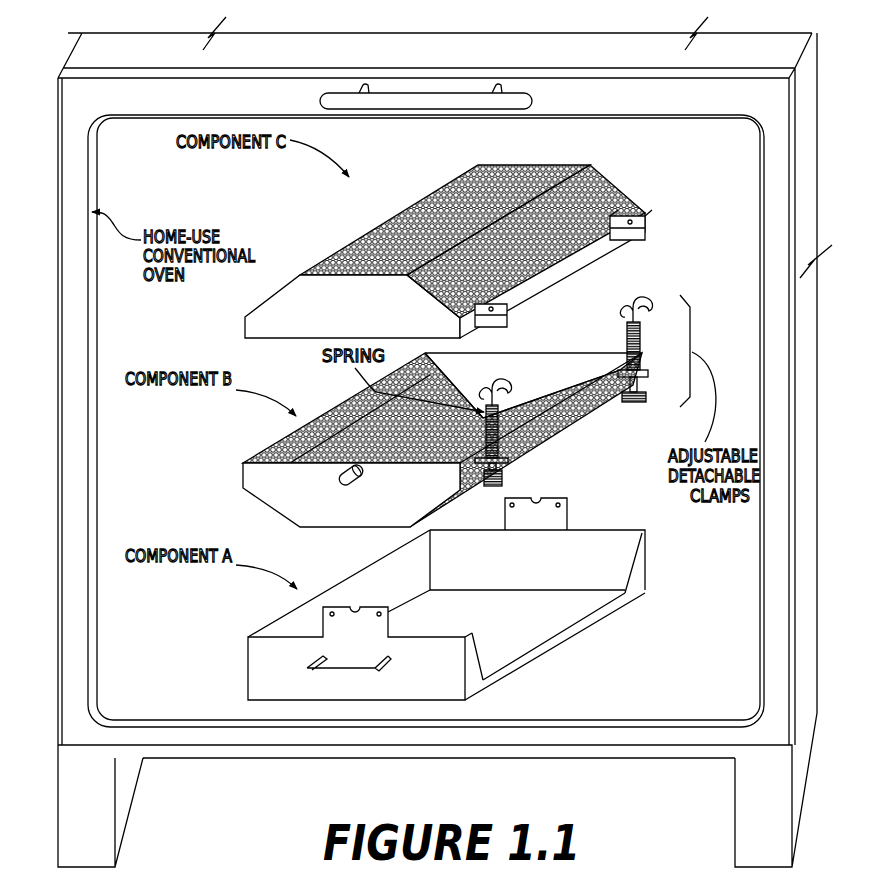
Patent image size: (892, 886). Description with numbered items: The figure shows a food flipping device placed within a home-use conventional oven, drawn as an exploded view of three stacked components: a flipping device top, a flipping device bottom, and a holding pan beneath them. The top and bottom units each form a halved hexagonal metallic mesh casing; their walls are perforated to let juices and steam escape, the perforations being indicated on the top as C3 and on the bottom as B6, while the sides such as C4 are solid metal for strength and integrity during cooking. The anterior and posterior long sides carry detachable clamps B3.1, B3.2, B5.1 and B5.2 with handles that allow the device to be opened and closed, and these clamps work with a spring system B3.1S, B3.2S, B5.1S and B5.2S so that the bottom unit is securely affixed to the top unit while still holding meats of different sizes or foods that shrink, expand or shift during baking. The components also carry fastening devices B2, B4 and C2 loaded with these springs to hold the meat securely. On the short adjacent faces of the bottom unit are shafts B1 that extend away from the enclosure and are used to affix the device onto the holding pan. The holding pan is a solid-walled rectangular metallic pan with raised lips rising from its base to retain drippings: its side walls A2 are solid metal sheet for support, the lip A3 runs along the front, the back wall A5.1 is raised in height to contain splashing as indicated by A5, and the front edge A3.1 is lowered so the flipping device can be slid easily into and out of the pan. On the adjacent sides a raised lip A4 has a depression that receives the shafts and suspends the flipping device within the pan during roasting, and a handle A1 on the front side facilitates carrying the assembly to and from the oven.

The fastening device of flipping device top C2 is at (628, 223).
The perforations of flipping device top C3 is at (306, 254).
The solid side of flipping device C4 is at (277, 320).
The perforations of flipping device bottom B6 is at (269, 437).
The fastening device of flipping device bottom B2 is at (510, 440).
The shaft B1 is at (316, 478).
The detachable clamp B5.2 is at (493, 375).
The spring loaded clamp B5.2S is at (502, 401).
The spring loaded clamp B3.2S is at (502, 478).
The detachable clamp B3.2 is at (489, 495).
The detachable clamp B5.1 is at (628, 299).
The spring loaded clamp B5.1S is at (624, 335).
The fastening device B4 is at (647, 360).
The spring loaded clamp B3.1S is at (646, 391).
The detachable clamp B3.1 is at (632, 405).
The raised lip at posterior side A5 is at (327, 574).
The raised back wall A5.1 is at (283, 611).
The raised lip at adjacent side A4 is at (528, 511).
The side wall A2 is at (402, 650).
The handle A1 is at (305, 677).
The raised lip at anterior side A3 is at (610, 616).
The lowered front edge A3.1 is at (565, 626).